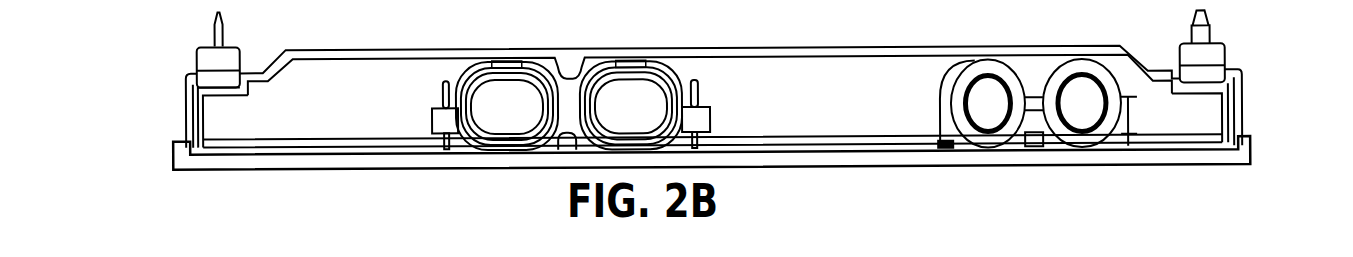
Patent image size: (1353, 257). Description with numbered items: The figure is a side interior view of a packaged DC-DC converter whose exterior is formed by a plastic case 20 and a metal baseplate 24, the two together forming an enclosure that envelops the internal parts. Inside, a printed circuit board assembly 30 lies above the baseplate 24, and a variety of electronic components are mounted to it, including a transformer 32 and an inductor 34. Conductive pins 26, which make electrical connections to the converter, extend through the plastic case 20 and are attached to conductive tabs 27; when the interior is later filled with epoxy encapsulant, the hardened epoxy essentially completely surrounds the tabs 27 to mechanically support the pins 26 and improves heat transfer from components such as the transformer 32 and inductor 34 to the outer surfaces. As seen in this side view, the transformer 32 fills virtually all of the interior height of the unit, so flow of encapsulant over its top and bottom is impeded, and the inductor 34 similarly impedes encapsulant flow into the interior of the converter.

The plastic case 20 is at (817, 55).
The baseplate 24 is at (397, 167).
The conductive pins 26 is at (208, 61).
The conductive tabs 27 is at (200, 113).
The printed circuit board assembly 30 is at (326, 142).
The transformer 32 is at (530, 97).
The inductor 34 is at (1073, 95).